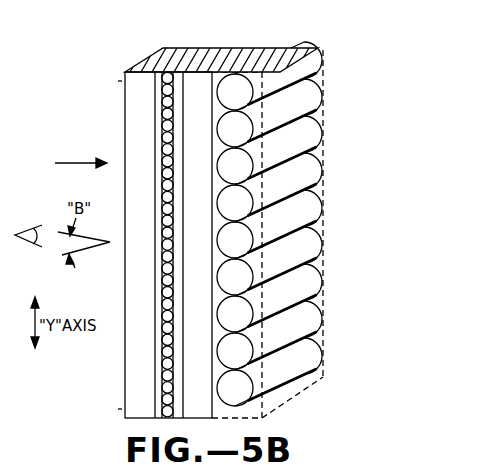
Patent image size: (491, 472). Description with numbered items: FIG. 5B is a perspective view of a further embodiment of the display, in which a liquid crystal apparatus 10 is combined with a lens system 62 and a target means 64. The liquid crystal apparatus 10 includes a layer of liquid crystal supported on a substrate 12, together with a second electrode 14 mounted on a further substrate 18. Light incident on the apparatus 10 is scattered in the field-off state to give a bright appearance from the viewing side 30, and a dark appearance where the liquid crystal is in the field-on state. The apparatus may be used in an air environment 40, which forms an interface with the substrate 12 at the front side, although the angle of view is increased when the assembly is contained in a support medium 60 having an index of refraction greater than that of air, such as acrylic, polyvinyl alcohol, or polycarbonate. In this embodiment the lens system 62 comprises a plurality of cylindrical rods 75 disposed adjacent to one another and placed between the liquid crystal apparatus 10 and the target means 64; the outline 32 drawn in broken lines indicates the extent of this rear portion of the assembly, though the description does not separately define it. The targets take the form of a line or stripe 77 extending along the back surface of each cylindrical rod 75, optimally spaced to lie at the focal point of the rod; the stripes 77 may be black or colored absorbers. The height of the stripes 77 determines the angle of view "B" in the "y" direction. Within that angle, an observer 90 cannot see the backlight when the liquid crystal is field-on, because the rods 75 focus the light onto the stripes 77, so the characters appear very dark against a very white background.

The liquid crystal apparatus 10 is at (162, 50).
The substrate 12 is at (128, 70).
The second electrode 14 is at (77, 162).
The substrate 18 is at (170, 66).
The viewing area or side 30 is at (108, 409).
The hidden outline 32 is at (322, 427).
The air environment 40 is at (108, 81).
The support medium 60 is at (202, 78).
The lens system 62 is at (233, 68).
The target means 64 is at (323, 73).
The cylindrical rods 75 is at (237, 88).
The stripe 77 is at (283, 76).
The observer 90 is at (38, 228).